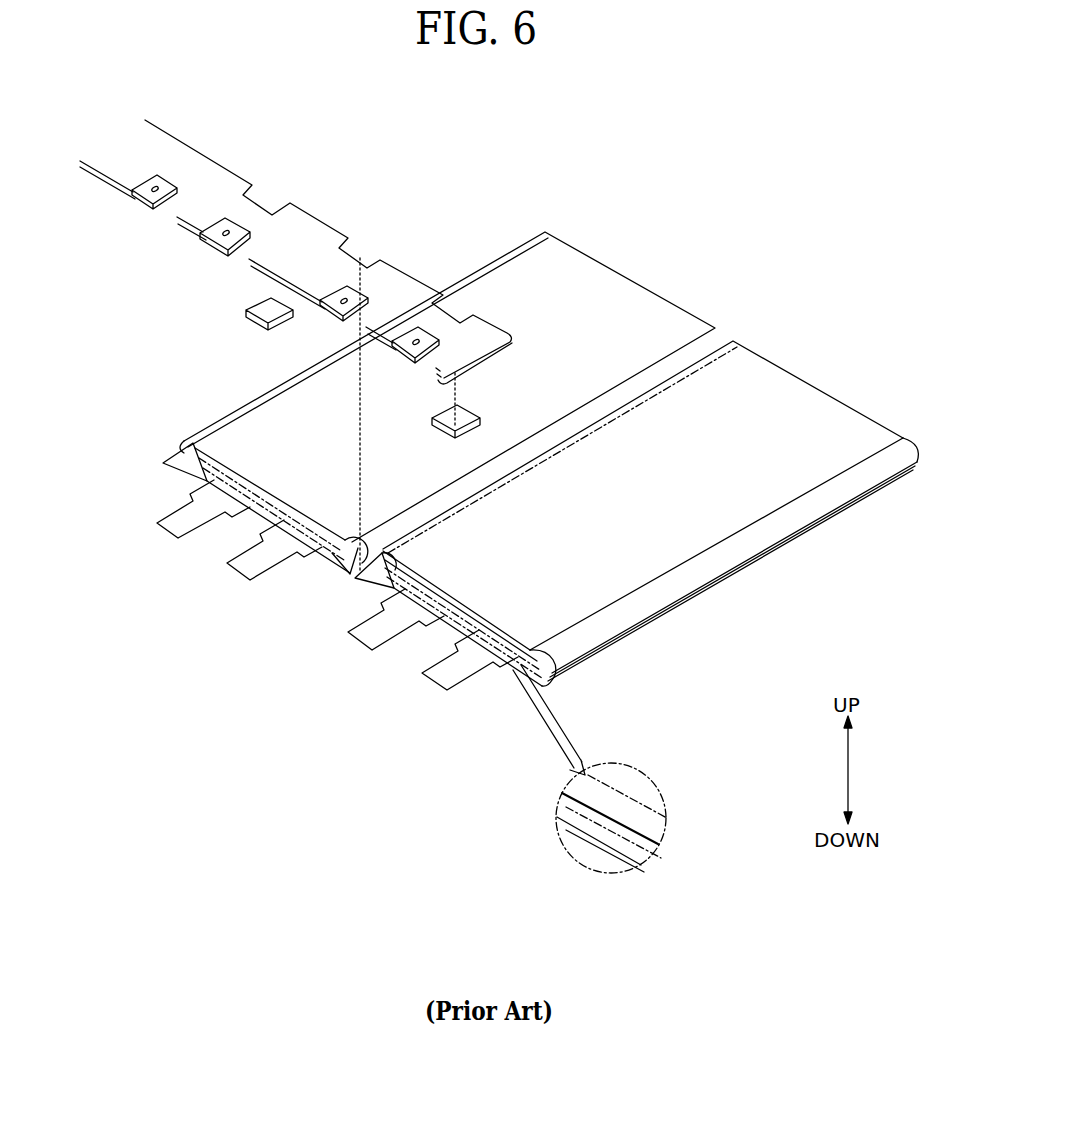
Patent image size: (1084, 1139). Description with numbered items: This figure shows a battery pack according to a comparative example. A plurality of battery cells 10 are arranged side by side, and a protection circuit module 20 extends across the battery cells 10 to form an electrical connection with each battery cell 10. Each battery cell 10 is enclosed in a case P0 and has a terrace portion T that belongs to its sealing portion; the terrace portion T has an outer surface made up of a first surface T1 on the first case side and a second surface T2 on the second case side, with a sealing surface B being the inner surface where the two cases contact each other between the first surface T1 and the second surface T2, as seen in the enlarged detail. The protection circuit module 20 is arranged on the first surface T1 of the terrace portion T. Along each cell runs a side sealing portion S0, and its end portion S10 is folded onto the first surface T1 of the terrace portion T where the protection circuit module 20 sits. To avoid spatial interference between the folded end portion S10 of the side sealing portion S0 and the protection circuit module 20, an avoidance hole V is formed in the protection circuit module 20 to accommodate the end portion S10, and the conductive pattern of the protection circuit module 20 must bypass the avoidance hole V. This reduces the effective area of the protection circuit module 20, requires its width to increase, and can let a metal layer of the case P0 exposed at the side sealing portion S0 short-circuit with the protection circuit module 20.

The protection circuit module 20 is at (296, 346).
The avoidance hole V is at (349, 239).
The case P0 is at (260, 425).
The battery cell 10 is at (433, 572).
The terrace portion T is at (450, 627).
The side sealing portion S0 is at (636, 513).
The end portion of side sealing portion S10 is at (536, 648).
The first surface T1 is at (623, 790).
The sealing surface B is at (630, 828).
The second surface T2 is at (613, 856).